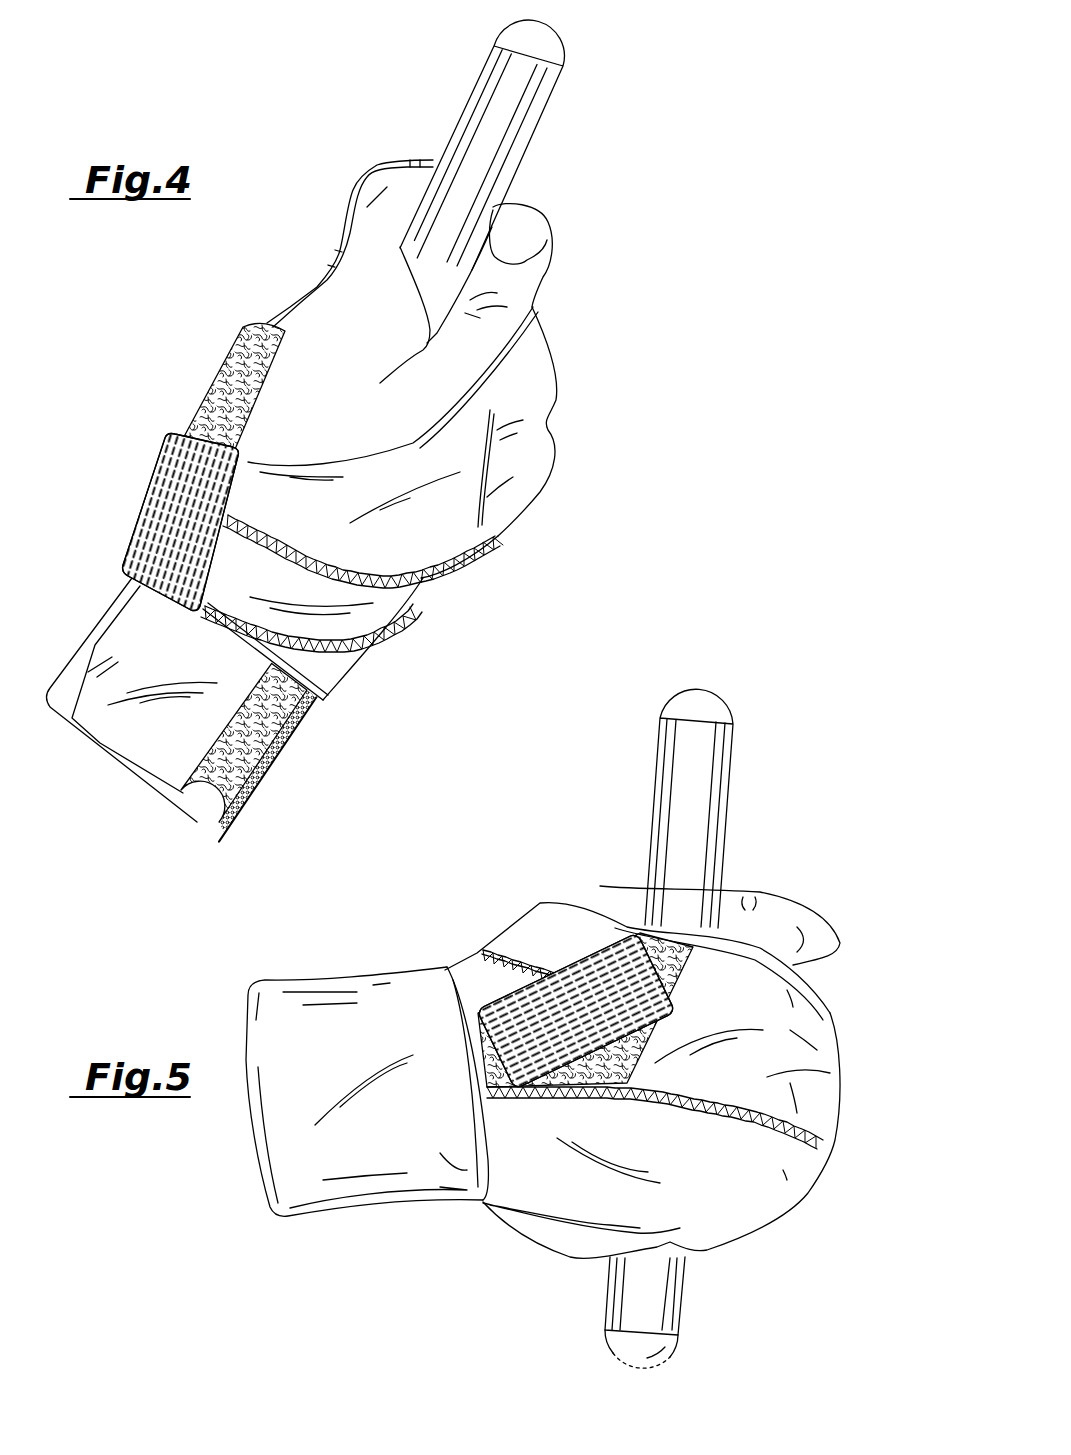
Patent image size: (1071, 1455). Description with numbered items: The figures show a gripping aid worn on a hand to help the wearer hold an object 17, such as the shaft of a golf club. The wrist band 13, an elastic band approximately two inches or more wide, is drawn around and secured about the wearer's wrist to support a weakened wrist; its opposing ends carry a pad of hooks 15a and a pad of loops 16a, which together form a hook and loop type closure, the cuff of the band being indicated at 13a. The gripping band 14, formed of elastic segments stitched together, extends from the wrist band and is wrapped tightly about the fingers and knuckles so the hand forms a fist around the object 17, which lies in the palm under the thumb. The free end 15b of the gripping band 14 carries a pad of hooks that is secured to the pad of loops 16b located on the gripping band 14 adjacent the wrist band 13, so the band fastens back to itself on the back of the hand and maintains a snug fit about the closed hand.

In FIG. 5, the wrist band 13 is at (362, 1010).
In FIG. 4, the cuff 13a is at (107, 630).
In FIG. 4, the gripping band 14 is at (550, 421).
In FIG. 5, the gripping band 14 is at (767, 1077).
In FIG. 4, the pad of hooks 15a is at (287, 747).
In FIG. 4, the free end of gripping band 15b is at (152, 475).
In FIG. 5, the free end of gripping band 15b is at (555, 1013).
In FIG. 4, the pad of loops 16a is at (200, 777).
In FIG. 4, the pad of loops 16b is at (223, 370).
In FIG. 5, the pad of loops 16b is at (667, 960).
In FIG. 4, the object 17 is at (545, 30).
In FIG. 5, the object 17 is at (702, 700).